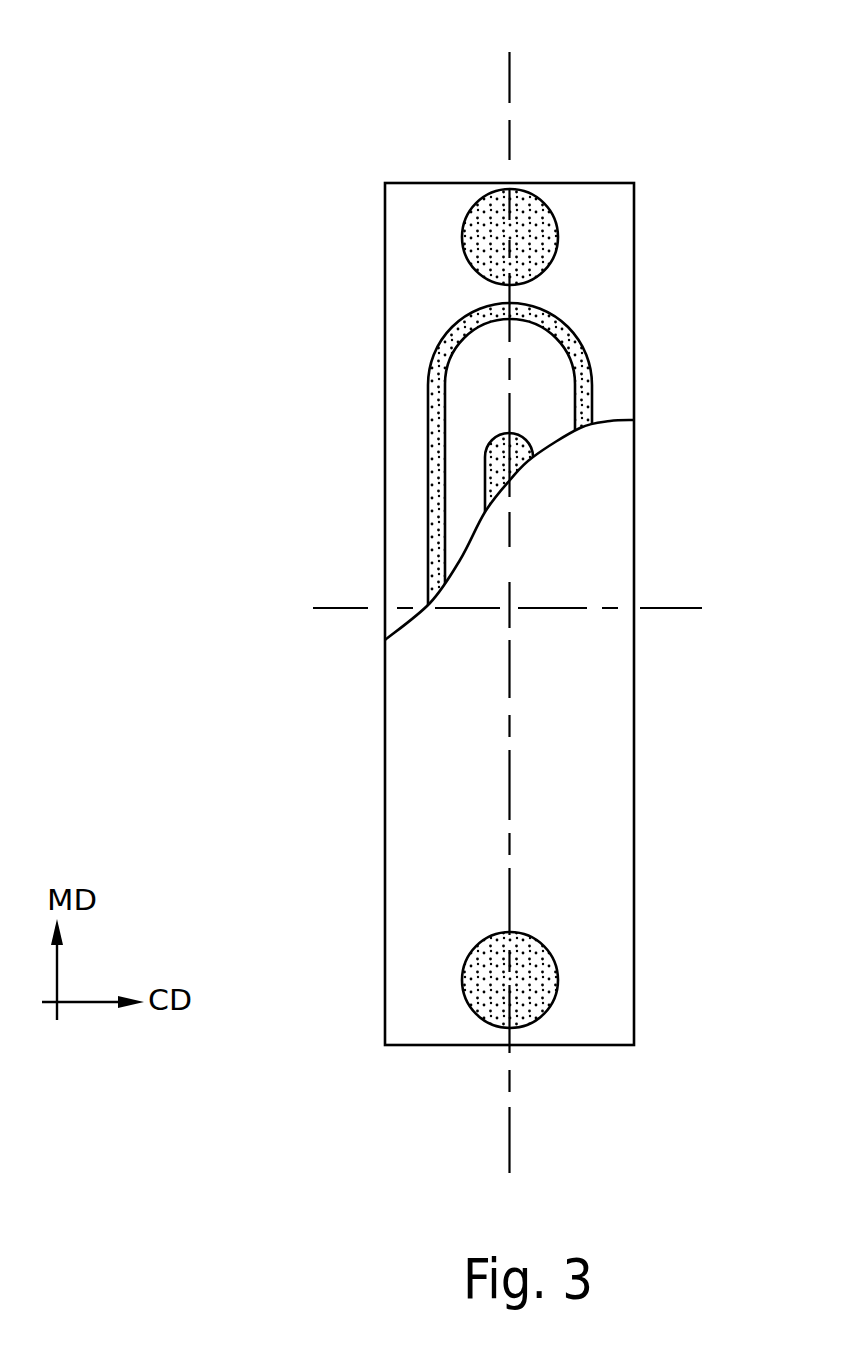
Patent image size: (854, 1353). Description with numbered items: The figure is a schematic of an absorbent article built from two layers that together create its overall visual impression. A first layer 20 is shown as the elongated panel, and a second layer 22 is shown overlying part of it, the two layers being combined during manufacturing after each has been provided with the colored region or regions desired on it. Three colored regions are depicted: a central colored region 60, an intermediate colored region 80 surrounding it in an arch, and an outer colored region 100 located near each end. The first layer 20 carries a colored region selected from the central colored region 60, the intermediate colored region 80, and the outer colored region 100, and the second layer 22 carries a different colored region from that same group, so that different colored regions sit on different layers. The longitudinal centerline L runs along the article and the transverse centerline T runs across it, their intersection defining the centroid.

The first layer 20 is at (606, 1033).
The second layer 22 is at (609, 402).
The central colored region 60 is at (497, 463).
The intermediate colored region 80 is at (583, 347).
The outer colored region 100 is at (542, 245).
The longitudinal centerline L is at (509, 88).
The transverse centerline T is at (663, 608).